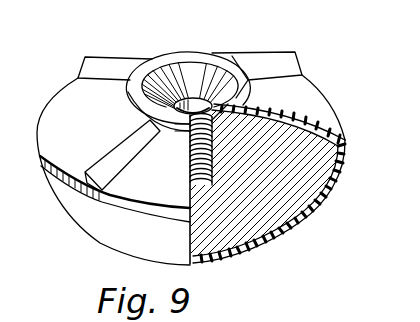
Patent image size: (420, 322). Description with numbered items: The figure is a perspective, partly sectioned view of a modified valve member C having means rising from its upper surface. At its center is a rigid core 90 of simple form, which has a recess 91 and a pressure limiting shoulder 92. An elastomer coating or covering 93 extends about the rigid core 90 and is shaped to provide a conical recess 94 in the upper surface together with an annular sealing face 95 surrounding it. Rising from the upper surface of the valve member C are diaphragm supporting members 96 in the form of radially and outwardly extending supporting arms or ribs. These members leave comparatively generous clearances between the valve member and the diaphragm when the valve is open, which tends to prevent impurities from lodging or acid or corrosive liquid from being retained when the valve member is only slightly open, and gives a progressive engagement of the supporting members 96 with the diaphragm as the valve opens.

The rigid core 90 is at (322, 148).
The recess 91 is at (270, 106).
The pressure limiting shoulder 92 is at (176, 100).
The elastomer coating 93 is at (272, 238).
The conical recess 94 is at (167, 77).
The annular sealing face 95 is at (135, 80).
The diaphragm supporting members 96 is at (98, 55).
The valve member C is at (335, 95).